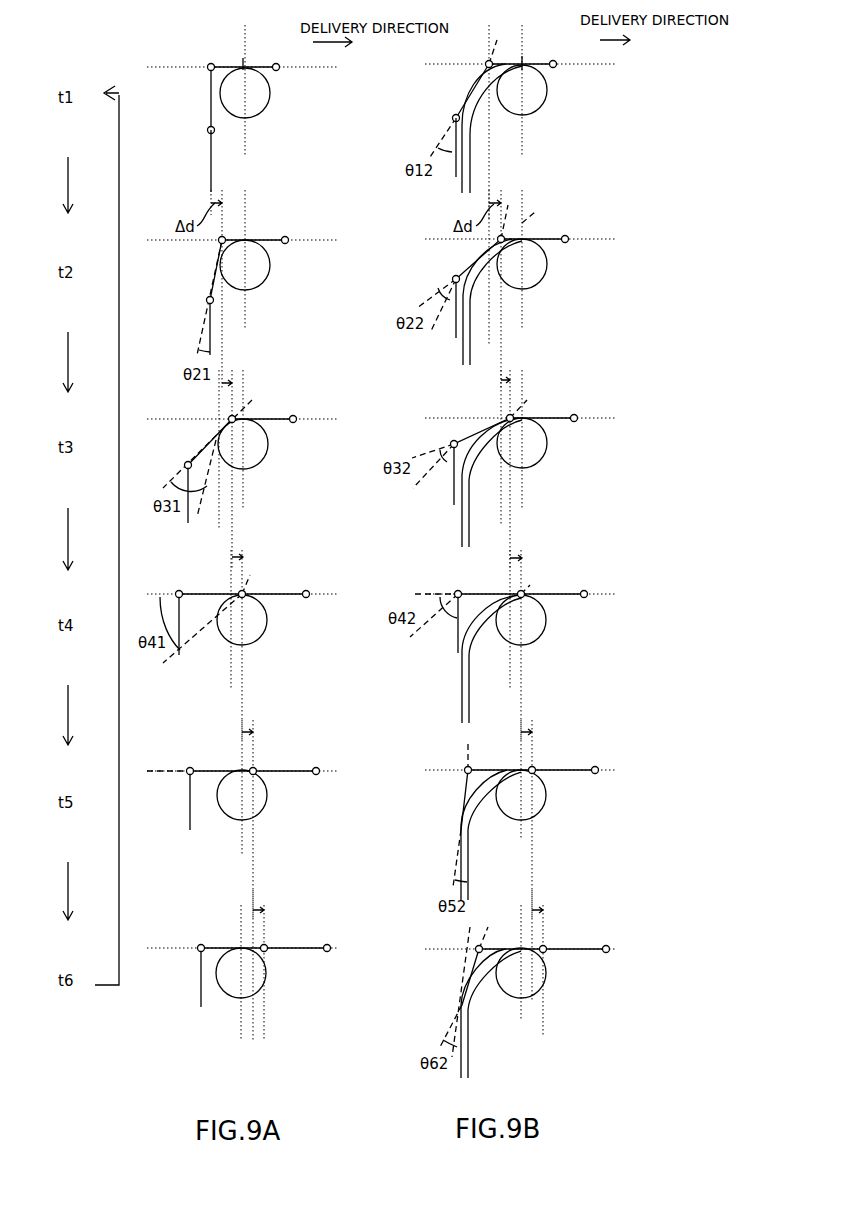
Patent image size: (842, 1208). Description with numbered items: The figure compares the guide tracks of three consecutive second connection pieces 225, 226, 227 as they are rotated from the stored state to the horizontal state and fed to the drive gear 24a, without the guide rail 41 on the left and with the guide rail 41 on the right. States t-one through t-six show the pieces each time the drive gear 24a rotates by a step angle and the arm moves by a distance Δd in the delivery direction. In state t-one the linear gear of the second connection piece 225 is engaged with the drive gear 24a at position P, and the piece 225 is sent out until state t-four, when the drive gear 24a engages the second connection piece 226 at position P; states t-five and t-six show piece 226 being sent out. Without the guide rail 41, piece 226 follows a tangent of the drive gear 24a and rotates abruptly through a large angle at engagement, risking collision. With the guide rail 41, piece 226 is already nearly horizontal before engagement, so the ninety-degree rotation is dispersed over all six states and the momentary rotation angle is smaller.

In FIG. 9A, the drive gear 24a is at (266, 110).
In FIG. 9B, the drive gear 24a is at (521, 531).
In FIG. 9A, the second connection piece 225 is at (257, 66).
In FIG. 9B, the second connection piece 225 is at (535, 63).
In FIG. 9A, the second connection piece 226 is at (208, 102).
In FIG. 9B, the second connection piece 226 is at (452, 100).
In FIG. 9A, the second connection piece 227 is at (209, 156).
In FIG. 9B, the second connection piece 227 is at (456, 182).
In FIG. 9B, the guide rail 41 is at (473, 116).
In FIG. 9A, the position P is at (243, 66).
In FIG. 9B, the position P is at (522, 63).